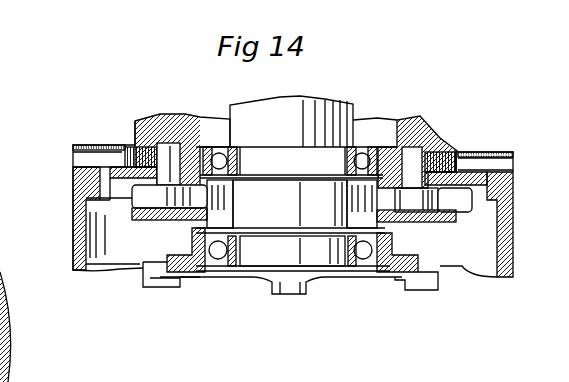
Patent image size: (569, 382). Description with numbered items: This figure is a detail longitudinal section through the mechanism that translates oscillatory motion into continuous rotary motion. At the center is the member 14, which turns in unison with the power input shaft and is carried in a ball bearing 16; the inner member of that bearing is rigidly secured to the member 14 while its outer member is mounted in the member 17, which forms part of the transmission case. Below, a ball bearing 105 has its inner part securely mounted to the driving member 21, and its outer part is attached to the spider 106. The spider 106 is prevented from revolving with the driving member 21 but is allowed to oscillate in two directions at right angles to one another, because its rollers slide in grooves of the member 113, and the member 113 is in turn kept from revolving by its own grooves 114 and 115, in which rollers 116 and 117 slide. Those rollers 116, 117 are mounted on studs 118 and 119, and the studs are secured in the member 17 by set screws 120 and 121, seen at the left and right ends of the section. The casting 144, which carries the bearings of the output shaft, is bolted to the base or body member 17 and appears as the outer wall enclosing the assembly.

The member 14 is at (286, 112).
The ball bearing 16 is at (364, 160).
The member 17 is at (72, 153).
The driving member 21 is at (267, 253).
The ball bearing 105 is at (363, 254).
The spider 106 is at (153, 278).
The member 113 is at (417, 219).
The groove 114 is at (446, 200).
The groove 115 is at (137, 202).
The roller 116 is at (428, 178).
The roller 117 is at (187, 147).
The stud 118 is at (410, 160).
The stud 119 is at (165, 153).
The set screw 120 is at (456, 150).
The set screw 121 is at (138, 155).
The casting 144 is at (507, 234).